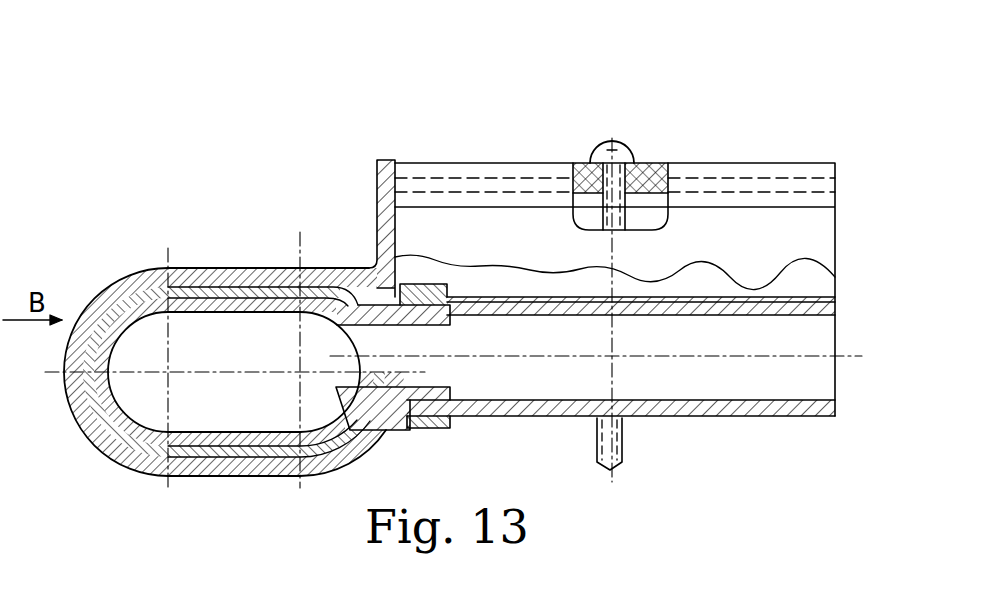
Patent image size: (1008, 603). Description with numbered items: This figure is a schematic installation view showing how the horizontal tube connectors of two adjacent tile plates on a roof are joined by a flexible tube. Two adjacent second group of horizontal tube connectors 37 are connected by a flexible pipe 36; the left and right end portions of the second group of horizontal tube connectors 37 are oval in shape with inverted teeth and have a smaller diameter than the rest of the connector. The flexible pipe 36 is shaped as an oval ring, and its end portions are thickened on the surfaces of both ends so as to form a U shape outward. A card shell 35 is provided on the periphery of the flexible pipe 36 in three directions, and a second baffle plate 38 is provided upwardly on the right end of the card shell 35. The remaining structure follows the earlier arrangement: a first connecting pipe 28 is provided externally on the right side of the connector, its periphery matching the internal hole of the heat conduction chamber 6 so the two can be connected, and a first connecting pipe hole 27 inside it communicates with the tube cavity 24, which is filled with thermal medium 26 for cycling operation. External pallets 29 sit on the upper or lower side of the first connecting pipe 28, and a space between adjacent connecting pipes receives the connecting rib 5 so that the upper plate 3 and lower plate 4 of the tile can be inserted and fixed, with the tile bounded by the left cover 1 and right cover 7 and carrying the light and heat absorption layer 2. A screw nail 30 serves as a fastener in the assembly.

The left cover 1 is at (643, 180).
The light and heat absorption layer 2 is at (640, 313).
The upper plate 3 is at (693, 313).
The lower plate 4 is at (673, 410).
The connecting rib 5 is at (755, 338).
The heat conduction chamber 6 is at (780, 368).
The right cover 7 is at (652, 190).
The tube cavity 24 is at (197, 353).
The thermal medium 26 is at (253, 333).
The first connecting pipe hole 27 is at (403, 343).
The first connecting pipe 28 is at (440, 300).
The external pallet 29 is at (430, 425).
The screw nail 30 is at (605, 148).
The card shell 35 is at (73, 326).
The flexible pipe 36 is at (103, 292).
The second group of horizontal tube connectors 37 is at (179, 295).
The second baffle plate 38 is at (381, 165).